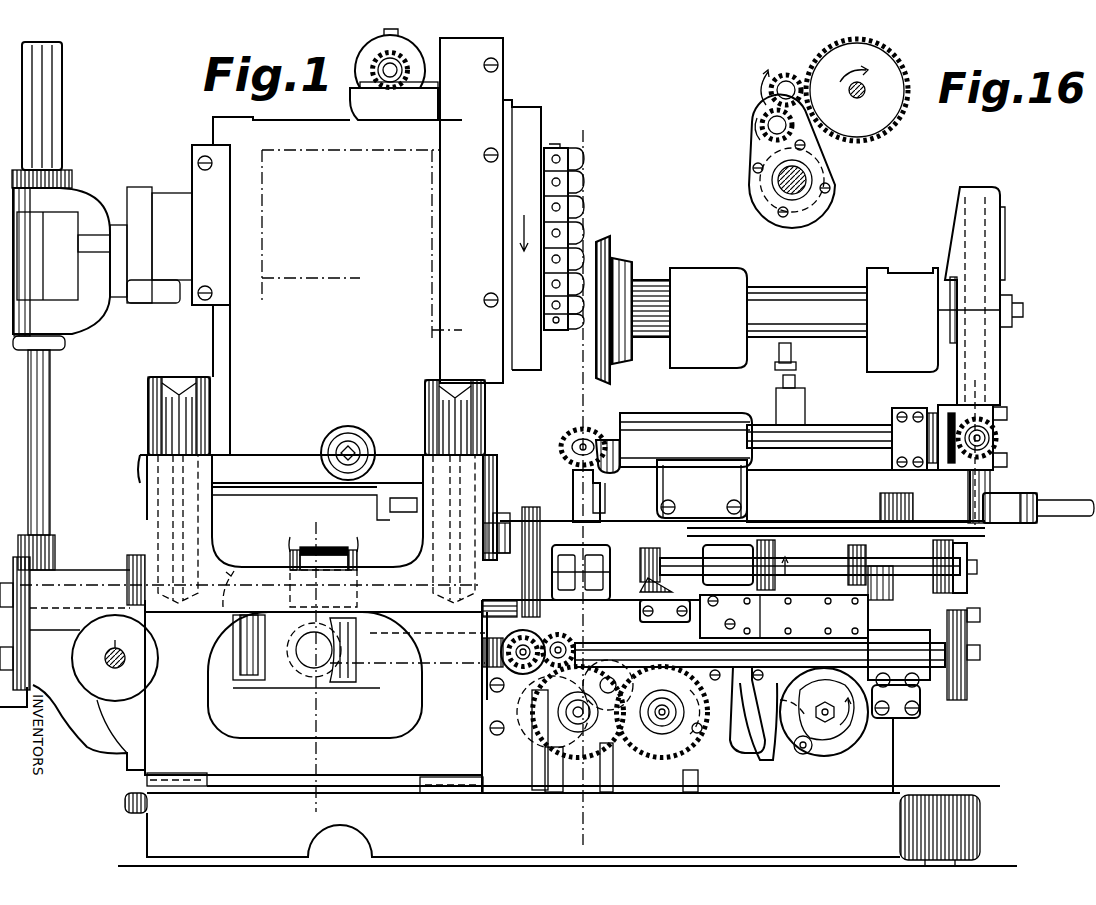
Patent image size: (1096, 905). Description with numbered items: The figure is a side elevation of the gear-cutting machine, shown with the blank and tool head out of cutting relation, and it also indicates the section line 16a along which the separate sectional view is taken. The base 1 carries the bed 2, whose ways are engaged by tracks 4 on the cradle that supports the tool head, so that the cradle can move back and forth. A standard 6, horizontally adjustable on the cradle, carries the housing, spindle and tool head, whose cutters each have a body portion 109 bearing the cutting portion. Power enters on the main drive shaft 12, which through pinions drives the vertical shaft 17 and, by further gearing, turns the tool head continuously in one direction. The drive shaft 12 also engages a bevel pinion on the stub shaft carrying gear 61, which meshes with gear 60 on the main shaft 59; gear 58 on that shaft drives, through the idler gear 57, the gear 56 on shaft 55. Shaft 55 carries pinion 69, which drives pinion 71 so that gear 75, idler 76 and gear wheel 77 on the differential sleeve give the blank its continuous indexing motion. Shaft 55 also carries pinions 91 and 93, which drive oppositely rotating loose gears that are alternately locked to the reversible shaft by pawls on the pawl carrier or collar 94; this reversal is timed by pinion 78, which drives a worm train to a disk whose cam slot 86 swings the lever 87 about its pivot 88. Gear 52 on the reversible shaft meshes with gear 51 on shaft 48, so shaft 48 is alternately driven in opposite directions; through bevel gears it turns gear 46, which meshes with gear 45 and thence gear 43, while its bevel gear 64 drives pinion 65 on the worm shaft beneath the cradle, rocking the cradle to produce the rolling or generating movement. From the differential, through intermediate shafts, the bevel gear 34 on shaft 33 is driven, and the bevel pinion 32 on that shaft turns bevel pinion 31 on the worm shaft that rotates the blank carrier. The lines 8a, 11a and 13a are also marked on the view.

In FIG. 1, the base 1 is at (567, 829).
In FIG. 1, the bed 2 is at (500, 693).
In FIG. 1, the tracks 4 is at (185, 415).
In FIG. 1, the standard 6 is at (366, 242).
In FIG. 1, the section line 8a is at (587, 486).
In FIG. 1, the section line 11a is at (323, 669).
In FIG. 1, the main drive shaft 12 is at (115, 658).
In FIG. 1, the shaft 13a is at (1028, 460).
In FIG. 1, the section line 16a is at (573, 505).
In FIG. 1, the vertical shaft 17 is at (40, 425).
In FIG. 1, the bevel pinion 31 is at (1000, 440).
In FIG. 1, the bevel pinion 32 is at (957, 472).
In FIG. 1, the shaft 33 is at (876, 430).
In FIG. 1, the bevel gear 34 is at (605, 428).
In FIG. 1, the gear 43 is at (552, 730).
In FIG. 1, the gear 45 is at (560, 645).
In FIG. 1, the gear 46 is at (485, 672).
In FIG. 1, the shaft 48 is at (742, 700).
In FIG. 16, the shaft 48 is at (785, 185).
In FIG. 1, the gear 51 is at (967, 678).
In FIG. 1, the gear 52 is at (968, 602).
In FIG. 1, the shaft 55 is at (800, 558).
In FIG. 16, the shaft 55 is at (862, 96).
In FIG. 16, the gear 56 is at (878, 128).
In FIG. 16, the idler gear 57 is at (788, 72).
In FIG. 16, the gear 58 is at (760, 128).
In FIG. 1, the main shaft 59 is at (257, 587).
In FIG. 1, the gear 60 is at (28, 578).
In FIG. 1, the gear 61 is at (30, 660).
In FIG. 1, the bevel gear 64 is at (333, 675).
In FIG. 1, the pinion 65 is at (298, 675).
In FIG. 1, the pinion 69 is at (648, 558).
In FIG. 1, the pinion 71 is at (662, 604).
In FIG. 1, the gear 75 is at (665, 760).
In FIG. 1, the idler 76 is at (637, 713).
In FIG. 1, the gear wheel 77 is at (587, 762).
In FIG. 1, the pinion 78 is at (953, 582).
In FIG. 1, the cam slot 86 is at (850, 748).
In FIG. 1, the lever 87 is at (796, 735).
In FIG. 1, the pivot 88 is at (803, 755).
In FIG. 1, the pinion 91 is at (768, 540).
In FIG. 1, the pinion 93 is at (857, 545).
In FIG. 1, the pawl carrier 94 is at (808, 600).
In FIG. 1, the body portion 109 is at (570, 212).